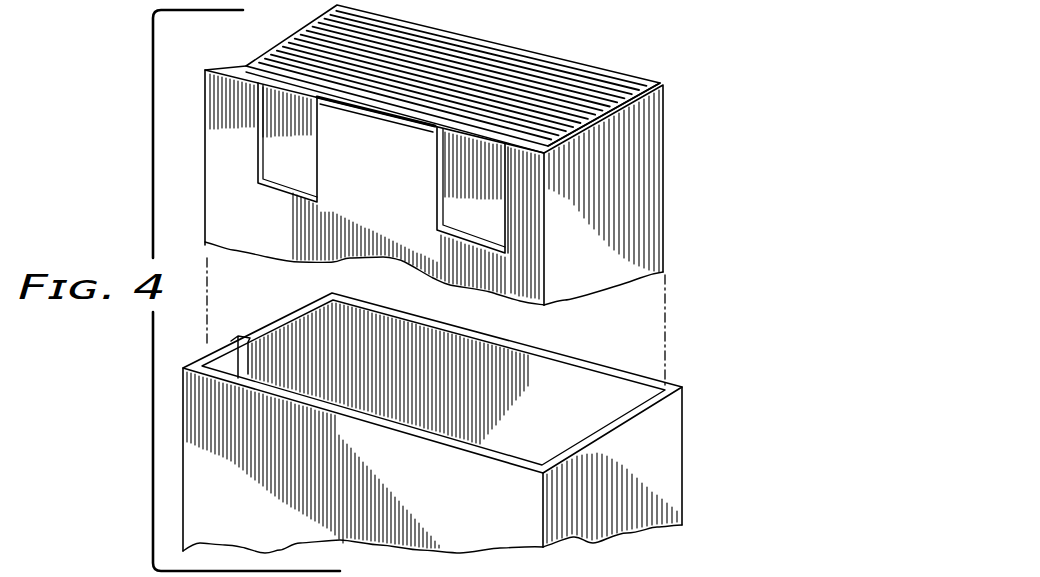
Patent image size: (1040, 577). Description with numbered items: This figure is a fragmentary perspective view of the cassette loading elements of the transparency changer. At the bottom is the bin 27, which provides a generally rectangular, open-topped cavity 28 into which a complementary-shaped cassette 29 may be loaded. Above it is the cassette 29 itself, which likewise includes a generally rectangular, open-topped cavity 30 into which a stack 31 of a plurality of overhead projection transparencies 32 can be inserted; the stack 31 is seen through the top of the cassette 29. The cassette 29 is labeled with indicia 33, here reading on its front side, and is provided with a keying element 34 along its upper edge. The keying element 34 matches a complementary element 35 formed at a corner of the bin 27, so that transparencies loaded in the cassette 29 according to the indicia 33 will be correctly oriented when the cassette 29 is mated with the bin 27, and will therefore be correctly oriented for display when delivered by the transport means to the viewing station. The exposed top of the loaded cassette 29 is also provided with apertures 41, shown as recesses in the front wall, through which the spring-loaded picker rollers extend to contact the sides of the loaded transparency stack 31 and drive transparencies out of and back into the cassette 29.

The bin 27 is at (668, 446).
The cavity 28 is at (410, 420).
The cassette 29 is at (650, 132).
The cavity 30 is at (627, 78).
The stack 31 is at (477, 65).
The overhead projection transparencies 32 is at (567, 80).
The indicia 33 is at (382, 168).
The keying element 34 is at (232, 64).
The complementary element 35 is at (232, 352).
The rear aperture 41 is at (288, 170).